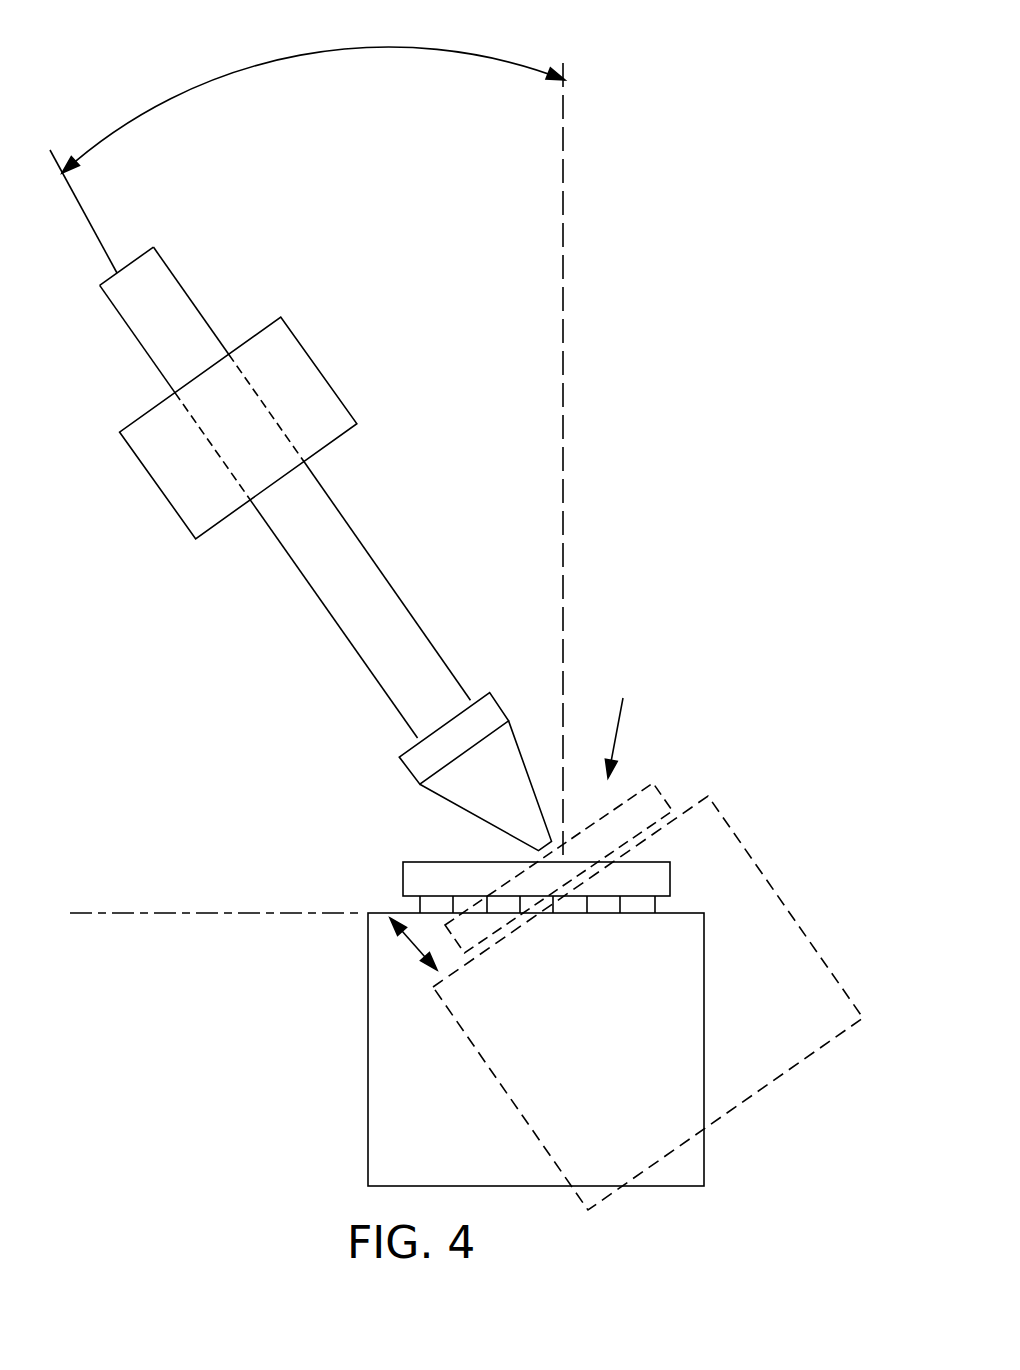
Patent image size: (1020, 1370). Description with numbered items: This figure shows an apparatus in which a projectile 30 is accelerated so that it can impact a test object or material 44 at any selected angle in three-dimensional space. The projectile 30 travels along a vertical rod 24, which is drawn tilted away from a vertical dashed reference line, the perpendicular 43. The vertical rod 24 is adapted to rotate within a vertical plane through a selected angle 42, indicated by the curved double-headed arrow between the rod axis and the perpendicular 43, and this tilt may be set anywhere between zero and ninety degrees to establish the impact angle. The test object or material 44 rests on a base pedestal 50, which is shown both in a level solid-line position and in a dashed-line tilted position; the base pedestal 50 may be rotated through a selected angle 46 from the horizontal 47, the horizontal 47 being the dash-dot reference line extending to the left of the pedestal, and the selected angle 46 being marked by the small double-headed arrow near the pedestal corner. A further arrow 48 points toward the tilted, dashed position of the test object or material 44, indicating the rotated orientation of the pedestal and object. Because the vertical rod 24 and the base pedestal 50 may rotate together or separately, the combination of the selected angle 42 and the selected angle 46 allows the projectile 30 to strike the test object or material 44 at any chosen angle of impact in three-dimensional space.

The vertical rod 24 is at (365, 552).
The projectile 30 is at (312, 325).
The selected angle 42 is at (307, 160).
The perpendicular 43 is at (563, 495).
The test object or material 44 is at (660, 796).
The selected angle 46 is at (405, 947).
The horizontal 47 is at (232, 913).
The rotation direction 48 is at (625, 719).
The base pedestal 50 is at (788, 917).